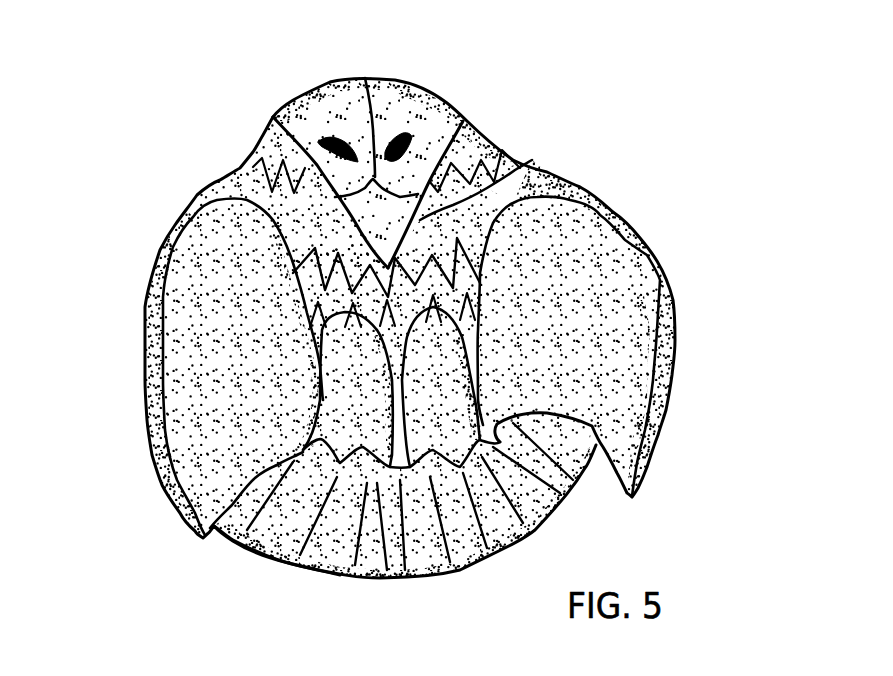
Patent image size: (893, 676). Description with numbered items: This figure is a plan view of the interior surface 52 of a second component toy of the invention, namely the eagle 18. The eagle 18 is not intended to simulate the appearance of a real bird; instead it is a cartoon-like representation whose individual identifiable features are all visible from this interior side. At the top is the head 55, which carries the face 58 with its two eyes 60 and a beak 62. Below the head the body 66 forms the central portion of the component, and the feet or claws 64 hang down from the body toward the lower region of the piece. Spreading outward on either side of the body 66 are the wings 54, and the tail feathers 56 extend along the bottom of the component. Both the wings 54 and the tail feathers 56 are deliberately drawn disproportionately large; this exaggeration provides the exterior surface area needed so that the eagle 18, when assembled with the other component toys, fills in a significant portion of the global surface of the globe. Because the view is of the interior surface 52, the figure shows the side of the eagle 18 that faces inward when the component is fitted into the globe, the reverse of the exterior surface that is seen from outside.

The eagle 18 is at (699, 423).
The interior surface 52 is at (390, 577).
The wings 54 is at (150, 270).
The head 55 is at (352, 80).
The tail feathers 56 is at (258, 553).
The face 58 is at (281, 124).
The eyes 60 is at (400, 131).
The beak 62 is at (430, 214).
The feet or claws 64 is at (347, 410).
The body 66 is at (313, 297).